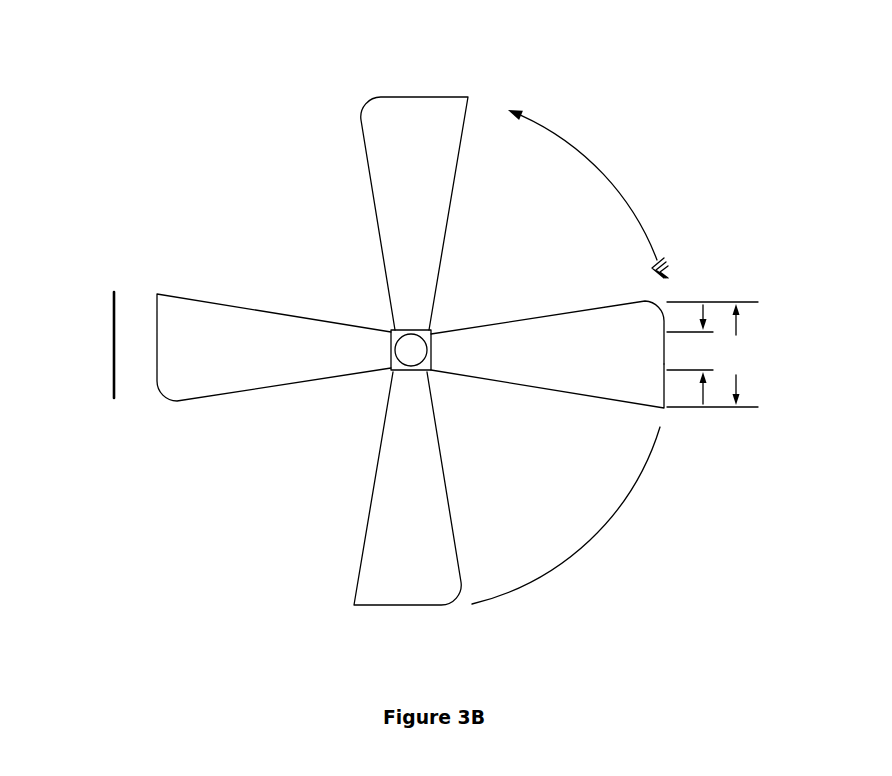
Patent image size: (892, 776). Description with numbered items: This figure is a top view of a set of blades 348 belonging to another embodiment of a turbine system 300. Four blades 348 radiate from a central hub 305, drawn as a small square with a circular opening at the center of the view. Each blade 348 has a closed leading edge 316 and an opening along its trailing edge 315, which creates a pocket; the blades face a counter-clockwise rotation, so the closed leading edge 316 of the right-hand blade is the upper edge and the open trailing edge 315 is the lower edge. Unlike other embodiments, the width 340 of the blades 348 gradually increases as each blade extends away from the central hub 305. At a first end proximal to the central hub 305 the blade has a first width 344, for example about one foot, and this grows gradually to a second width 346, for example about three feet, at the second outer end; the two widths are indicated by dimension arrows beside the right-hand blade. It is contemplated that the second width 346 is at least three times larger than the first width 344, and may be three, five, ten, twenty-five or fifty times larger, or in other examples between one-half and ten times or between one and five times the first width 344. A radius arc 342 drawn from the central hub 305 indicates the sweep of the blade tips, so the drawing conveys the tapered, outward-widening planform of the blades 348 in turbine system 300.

The turbine system 300 is at (202, 120).
The central hub 305 is at (412, 347).
The trailing edge 315 is at (668, 419).
The closed leading edge 316 is at (590, 294).
The width 340 is at (113, 352).
The blade radius / swept arc 342 is at (580, 526).
The first width 344 is at (690, 354).
The second width 346 is at (713, 354).
The blades 348 is at (222, 305).